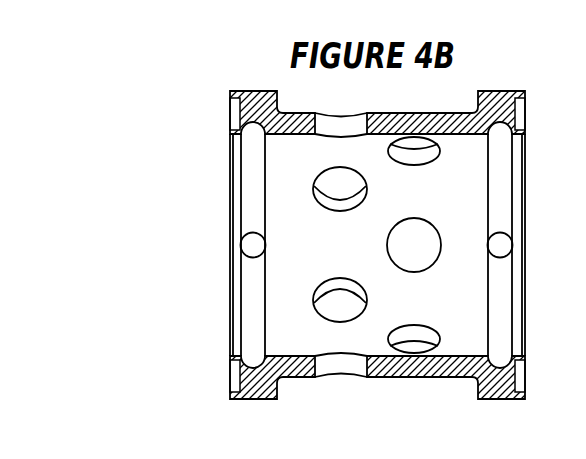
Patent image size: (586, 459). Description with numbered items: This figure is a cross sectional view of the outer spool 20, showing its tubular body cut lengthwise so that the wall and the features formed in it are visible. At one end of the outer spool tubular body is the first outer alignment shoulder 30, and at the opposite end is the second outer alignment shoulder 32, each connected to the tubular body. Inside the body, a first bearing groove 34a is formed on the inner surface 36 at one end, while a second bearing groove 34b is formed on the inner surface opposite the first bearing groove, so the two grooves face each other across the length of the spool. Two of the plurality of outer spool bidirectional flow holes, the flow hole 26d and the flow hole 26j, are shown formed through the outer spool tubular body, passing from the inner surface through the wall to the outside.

The outer spool 20 is at (145, 76).
The first outer alignment shoulder 30 is at (253, 90).
The second outer alignment shoulder 32 is at (501, 90).
The outer spool bidirectional flow hole 26d is at (320, 115).
The outer spool bidirectional flow hole 26j is at (320, 375).
The inner surface 36 is at (371, 152).
The first bearing groove 34a is at (252, 128).
The second bearing groove 34b is at (501, 128).